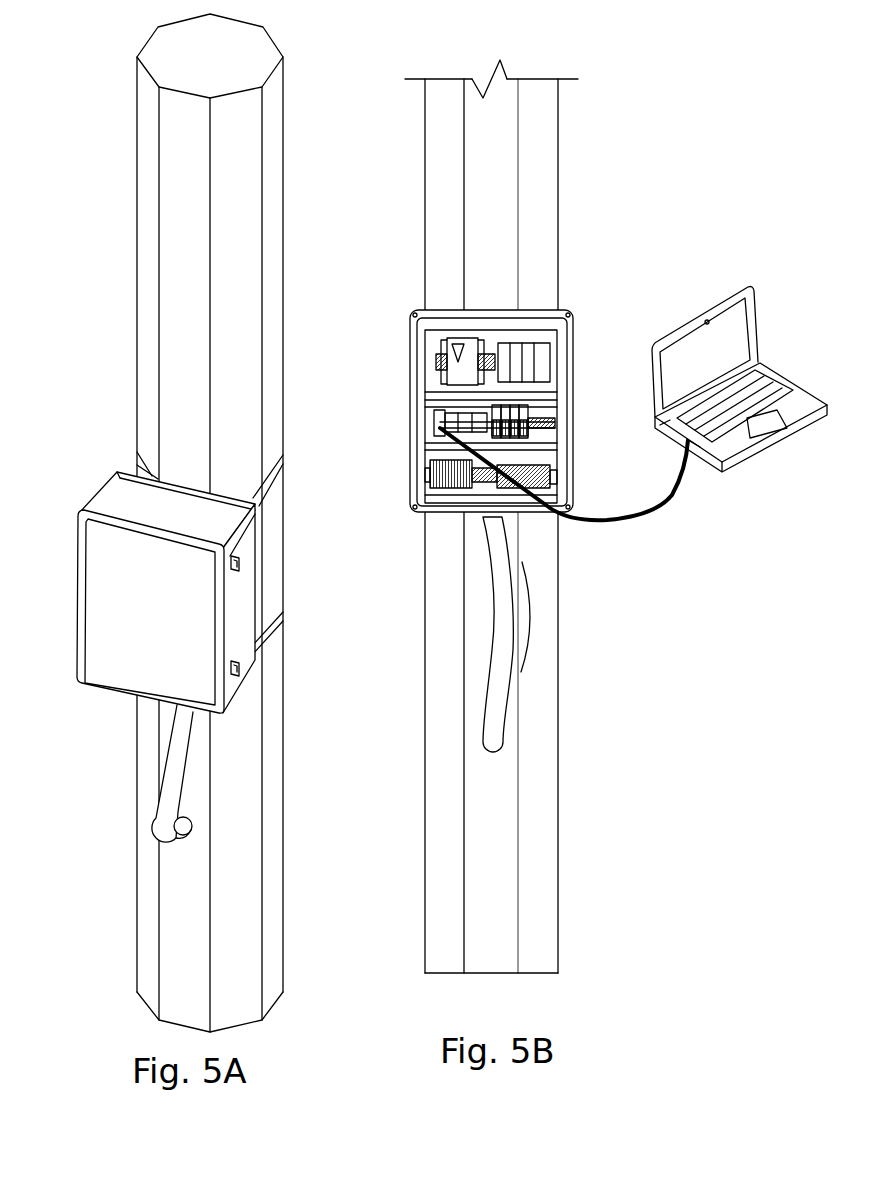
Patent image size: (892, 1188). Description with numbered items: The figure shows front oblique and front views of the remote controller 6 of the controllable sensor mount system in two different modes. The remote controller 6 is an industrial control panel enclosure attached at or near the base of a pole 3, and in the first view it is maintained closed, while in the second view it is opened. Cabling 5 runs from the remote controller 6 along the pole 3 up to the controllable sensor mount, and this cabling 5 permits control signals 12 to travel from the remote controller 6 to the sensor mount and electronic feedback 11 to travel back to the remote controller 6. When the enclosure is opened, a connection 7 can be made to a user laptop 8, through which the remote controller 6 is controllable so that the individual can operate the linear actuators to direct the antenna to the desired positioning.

In FIG. 5A, the pole 3 is at (153, 160).
In FIG. 5A, the cabling 5 is at (170, 788).
In FIG. 5A, the remote controller 6 is at (99, 558).
In FIG. 5B, the remote controller 6 is at (570, 300).
In FIG. 5B, the connection 7 is at (680, 507).
In FIG. 5B, the user laptop 8 is at (745, 330).
In FIG. 5B, the electronic feedback 11 is at (484, 572).
In FIG. 5B, the control signals 12 is at (528, 610).